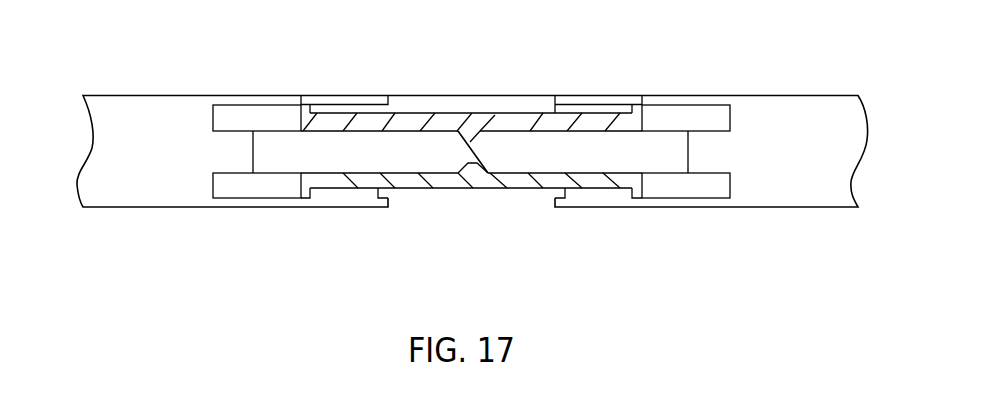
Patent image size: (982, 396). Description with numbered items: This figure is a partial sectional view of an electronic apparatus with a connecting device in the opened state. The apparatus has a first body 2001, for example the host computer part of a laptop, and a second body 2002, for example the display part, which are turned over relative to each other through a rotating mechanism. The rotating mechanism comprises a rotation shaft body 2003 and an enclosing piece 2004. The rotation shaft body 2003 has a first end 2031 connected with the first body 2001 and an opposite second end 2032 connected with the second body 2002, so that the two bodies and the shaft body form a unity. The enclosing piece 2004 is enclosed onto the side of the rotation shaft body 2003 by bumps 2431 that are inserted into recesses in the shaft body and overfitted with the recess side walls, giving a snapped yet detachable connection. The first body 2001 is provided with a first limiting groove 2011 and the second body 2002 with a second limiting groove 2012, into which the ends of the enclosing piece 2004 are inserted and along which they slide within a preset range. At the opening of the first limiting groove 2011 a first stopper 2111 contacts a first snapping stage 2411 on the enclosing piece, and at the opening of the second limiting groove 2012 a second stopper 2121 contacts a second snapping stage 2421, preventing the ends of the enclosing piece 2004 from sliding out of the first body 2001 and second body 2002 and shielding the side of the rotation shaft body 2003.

The first body 2001 is at (147, 115).
The second body 2002 is at (812, 117).
The first limiting groove 2011 is at (242, 120).
The second limiting groove 2012 is at (710, 118).
The first stopper 2111 is at (386, 104).
The second stopper 2121 is at (558, 106).
The first snapping stage 2411 is at (382, 52).
The second snapping stage 2421 is at (633, 104).
The bumps 2431 is at (488, 173).
The rotation shaft body 2003 is at (417, 157).
The enclosing piece 2004 is at (600, 174).
The first end 2031 is at (274, 155).
The second end 2032 is at (670, 160).